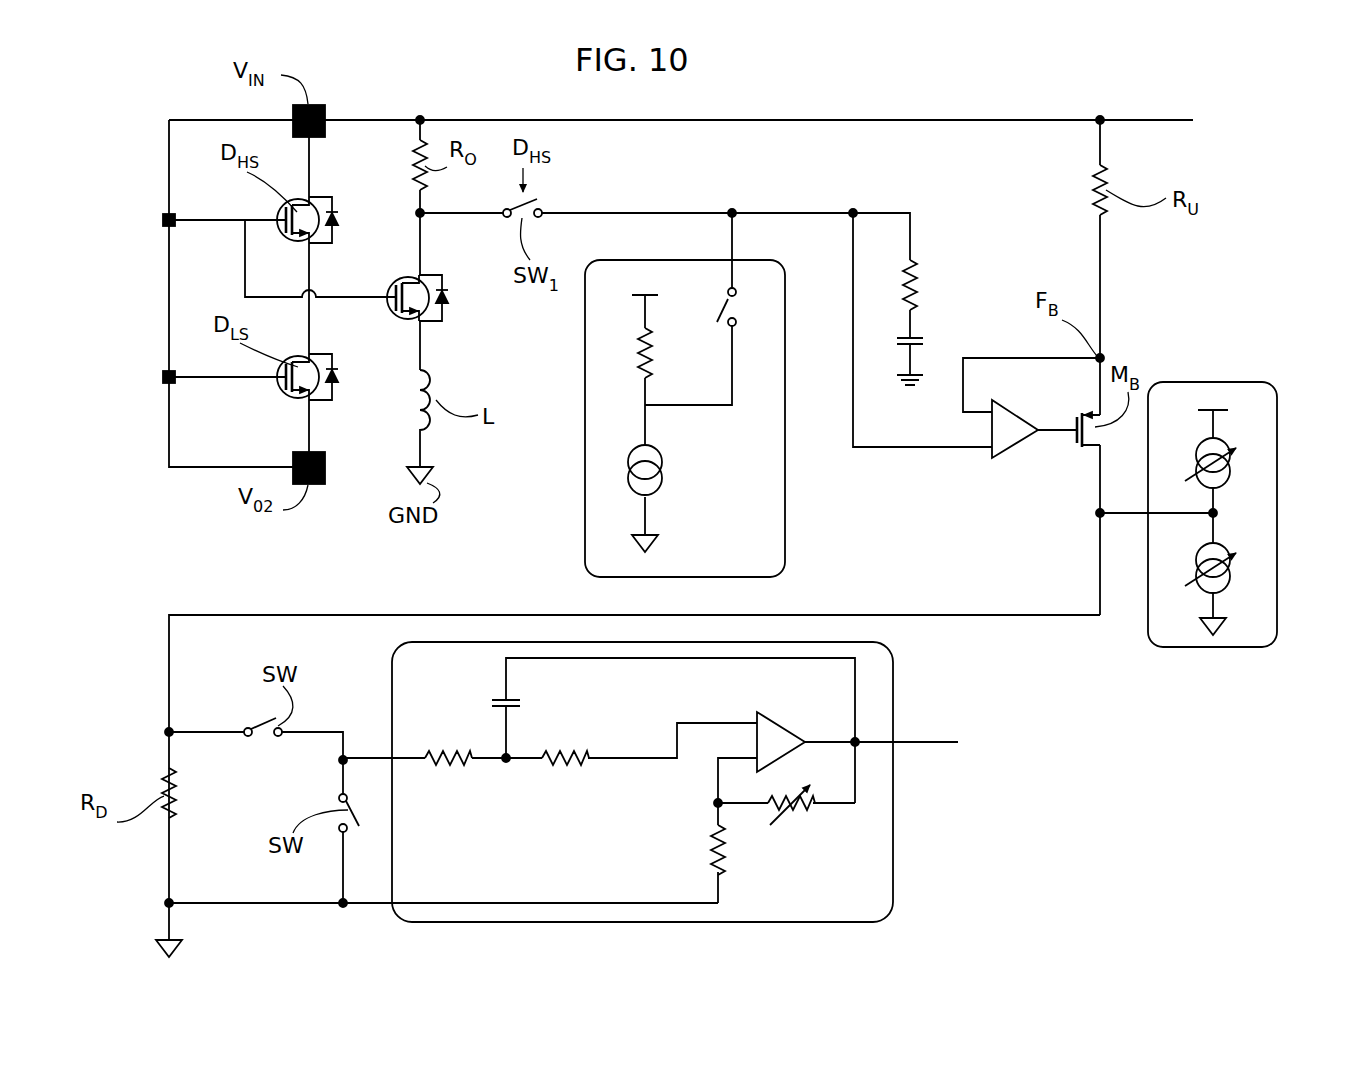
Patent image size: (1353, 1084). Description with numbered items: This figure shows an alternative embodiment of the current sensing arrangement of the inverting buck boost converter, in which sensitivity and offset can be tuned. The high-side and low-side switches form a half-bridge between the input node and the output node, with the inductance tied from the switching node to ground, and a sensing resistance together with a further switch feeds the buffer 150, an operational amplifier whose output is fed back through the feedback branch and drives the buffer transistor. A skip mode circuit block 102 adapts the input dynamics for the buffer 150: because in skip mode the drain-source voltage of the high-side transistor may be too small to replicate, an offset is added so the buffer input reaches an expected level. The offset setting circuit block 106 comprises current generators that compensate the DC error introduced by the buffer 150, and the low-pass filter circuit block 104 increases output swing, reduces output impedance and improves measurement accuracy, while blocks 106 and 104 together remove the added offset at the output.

The skip mode circuit block 102 is at (768, 510).
The low-pass filter circuit block 104 is at (893, 843).
The offset setting circuit block 106 is at (1253, 637).
The buffer 150 is at (1016, 440).